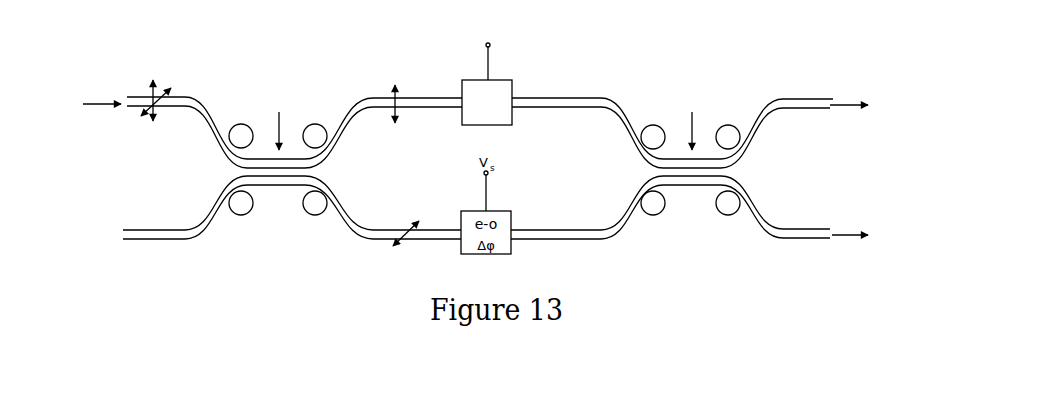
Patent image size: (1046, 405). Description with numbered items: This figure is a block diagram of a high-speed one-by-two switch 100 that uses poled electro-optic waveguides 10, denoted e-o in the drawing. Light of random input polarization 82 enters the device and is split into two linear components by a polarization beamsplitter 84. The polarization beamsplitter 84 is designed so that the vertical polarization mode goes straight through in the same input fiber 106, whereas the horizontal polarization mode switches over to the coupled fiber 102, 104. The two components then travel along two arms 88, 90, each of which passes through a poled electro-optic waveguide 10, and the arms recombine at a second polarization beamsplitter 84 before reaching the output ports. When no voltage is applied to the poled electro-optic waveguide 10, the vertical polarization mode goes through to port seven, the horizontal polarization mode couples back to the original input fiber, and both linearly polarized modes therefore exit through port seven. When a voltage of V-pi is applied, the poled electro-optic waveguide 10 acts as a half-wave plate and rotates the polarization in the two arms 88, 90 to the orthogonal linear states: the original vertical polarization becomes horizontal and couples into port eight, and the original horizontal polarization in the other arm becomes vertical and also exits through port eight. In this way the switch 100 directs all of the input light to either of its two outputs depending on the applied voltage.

The high-speed 1×2 switch 100 is at (167, 58).
The random input polarization 82 is at (127, 108).
The input fiber 106 is at (123, 233).
The polarization beamsplitter 84 is at (280, 177).
The first arm 88 is at (425, 97).
The second arm 90 is at (375, 234).
The poled electro-optic waveguide 10 is at (513, 87).
The coupled fiber 102 is at (813, 98).
The coupled fiber 104 is at (817, 235).